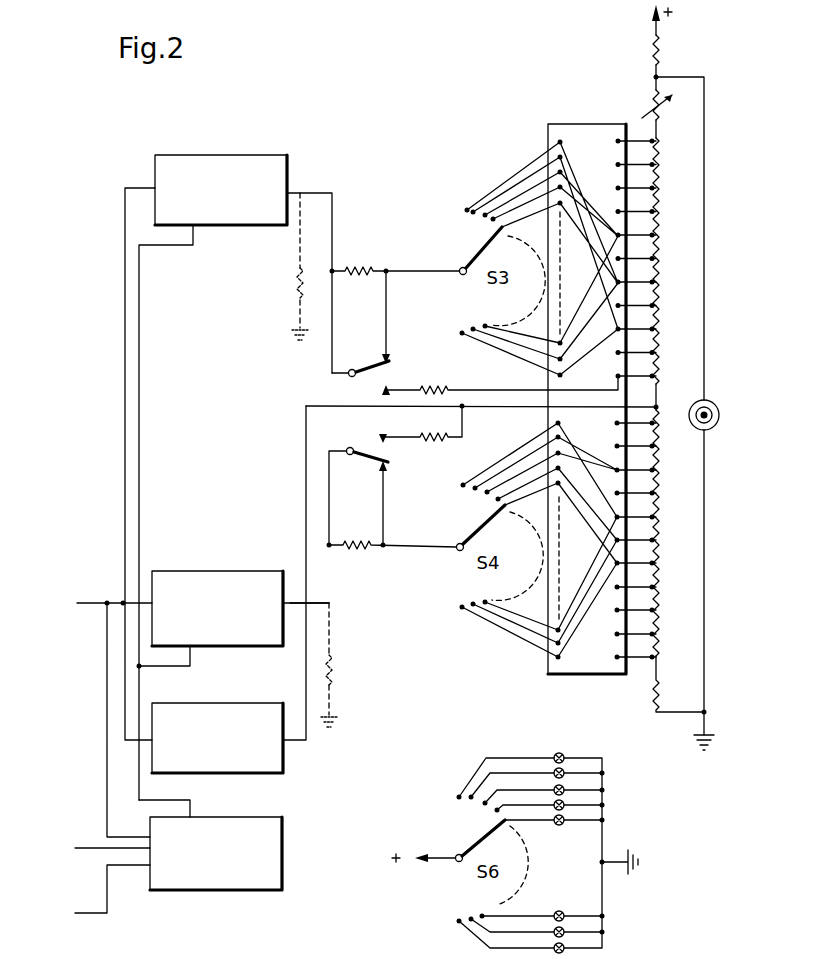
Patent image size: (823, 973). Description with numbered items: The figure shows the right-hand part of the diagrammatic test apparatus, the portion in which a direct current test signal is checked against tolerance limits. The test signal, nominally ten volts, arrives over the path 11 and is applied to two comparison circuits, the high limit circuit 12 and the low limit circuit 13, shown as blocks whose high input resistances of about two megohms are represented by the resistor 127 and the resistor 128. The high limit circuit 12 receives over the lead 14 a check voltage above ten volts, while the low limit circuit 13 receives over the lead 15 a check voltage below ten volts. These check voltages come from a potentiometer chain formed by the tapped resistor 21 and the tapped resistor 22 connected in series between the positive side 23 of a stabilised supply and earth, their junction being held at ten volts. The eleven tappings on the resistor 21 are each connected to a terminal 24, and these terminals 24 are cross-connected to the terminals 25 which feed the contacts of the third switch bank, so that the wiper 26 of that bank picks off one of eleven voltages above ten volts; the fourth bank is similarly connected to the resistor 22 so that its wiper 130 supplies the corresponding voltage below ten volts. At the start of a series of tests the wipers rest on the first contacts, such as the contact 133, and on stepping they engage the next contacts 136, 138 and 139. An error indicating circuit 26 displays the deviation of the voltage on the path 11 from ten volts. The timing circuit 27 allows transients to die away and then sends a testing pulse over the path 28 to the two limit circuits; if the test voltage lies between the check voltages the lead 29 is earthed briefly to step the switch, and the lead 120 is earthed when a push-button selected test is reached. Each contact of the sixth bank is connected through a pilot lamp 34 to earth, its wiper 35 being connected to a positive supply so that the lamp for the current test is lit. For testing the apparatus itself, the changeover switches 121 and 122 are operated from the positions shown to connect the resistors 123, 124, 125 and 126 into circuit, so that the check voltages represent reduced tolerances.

The path 11 is at (90, 603).
The high limit circuit 12 is at (272, 163).
The low limit circuit 13 is at (243, 573).
The lead 14 is at (320, 193).
The lead 15 is at (292, 603).
The tapped resistor 21 is at (663, 215).
The tapped resistor 22 is at (660, 553).
The positive side of stabilised direct current supply 23 is at (655, 65).
The terminals 24 is at (618, 141).
The terminals 25 is at (562, 142).
The wiper 26 is at (478, 253).
The timing circuit 27 is at (272, 882).
The path 28 is at (158, 800).
The lead 29 is at (132, 850).
The pilot lamp 34 is at (558, 753).
The wiper 35 is at (482, 842).
The lead 120 is at (107, 913).
The changeover switch 121 is at (381, 377).
The changeover switch 122 is at (381, 449).
The resistor 123 is at (395, 259).
The resistor 124 is at (500, 380).
The resistor 125 is at (392, 533).
The resistor 126 is at (420, 437).
The resistor 127 is at (286, 266).
The resistor 128 is at (342, 665).
The wiper 130 is at (468, 538).
The first contact 133 is at (467, 210).
The contact 136 is at (462, 485).
The contact 138 is at (473, 213).
The contact 139 is at (474, 489).